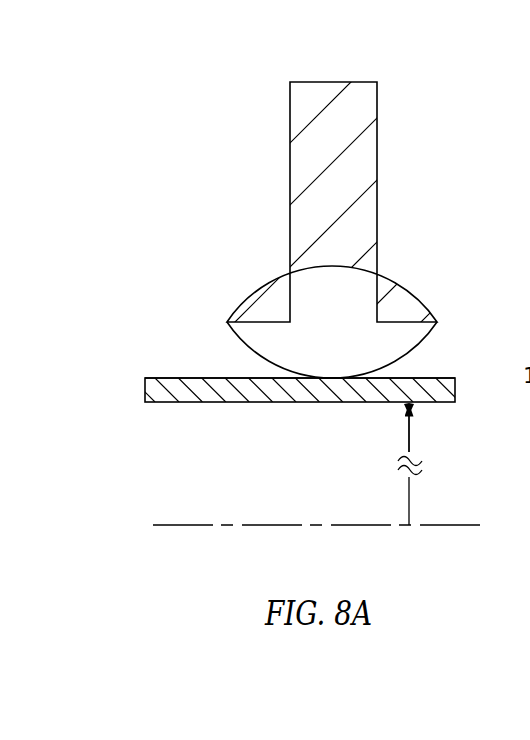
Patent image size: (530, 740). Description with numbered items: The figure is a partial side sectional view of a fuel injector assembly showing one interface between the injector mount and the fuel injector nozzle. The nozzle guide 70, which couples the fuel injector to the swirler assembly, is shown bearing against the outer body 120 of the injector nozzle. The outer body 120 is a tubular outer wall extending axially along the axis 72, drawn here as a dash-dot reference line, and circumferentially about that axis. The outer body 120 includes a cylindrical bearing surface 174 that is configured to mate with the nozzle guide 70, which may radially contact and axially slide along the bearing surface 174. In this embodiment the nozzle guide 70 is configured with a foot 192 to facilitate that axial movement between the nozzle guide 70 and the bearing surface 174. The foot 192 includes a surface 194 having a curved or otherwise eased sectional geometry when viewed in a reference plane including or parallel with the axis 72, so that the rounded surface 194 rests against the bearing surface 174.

The injector nozzle guide 70 is at (394, 171).
The foot 192 is at (418, 362).
The outer body 120 is at (138, 390).
The bearing surface 174 is at (168, 377).
The surface 194 is at (331, 380).
The axis 72 is at (472, 527).